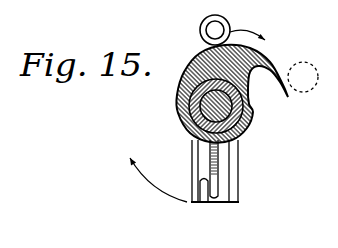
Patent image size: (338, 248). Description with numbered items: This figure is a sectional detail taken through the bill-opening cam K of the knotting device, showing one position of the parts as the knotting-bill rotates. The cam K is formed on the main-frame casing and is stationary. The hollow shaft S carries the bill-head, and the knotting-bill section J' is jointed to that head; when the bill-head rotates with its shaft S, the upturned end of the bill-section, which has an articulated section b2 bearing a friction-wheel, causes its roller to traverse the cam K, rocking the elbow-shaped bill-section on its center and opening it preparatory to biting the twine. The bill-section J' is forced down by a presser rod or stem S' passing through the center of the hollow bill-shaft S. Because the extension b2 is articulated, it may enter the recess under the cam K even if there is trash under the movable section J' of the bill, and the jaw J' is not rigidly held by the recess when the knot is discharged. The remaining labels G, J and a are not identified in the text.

The articulated section of the bill-section b2 is at (200, 25).
The bill-opening cam K is at (264, 57).
The hatched body G is at (251, 120).
The hollow shaft S is at (196, 110).
The presser rod or stem S' is at (191, 106).
The stem J is at (223, 171).
The knotting-bill section J' is at (215, 218).
The catch element a is at (204, 188).